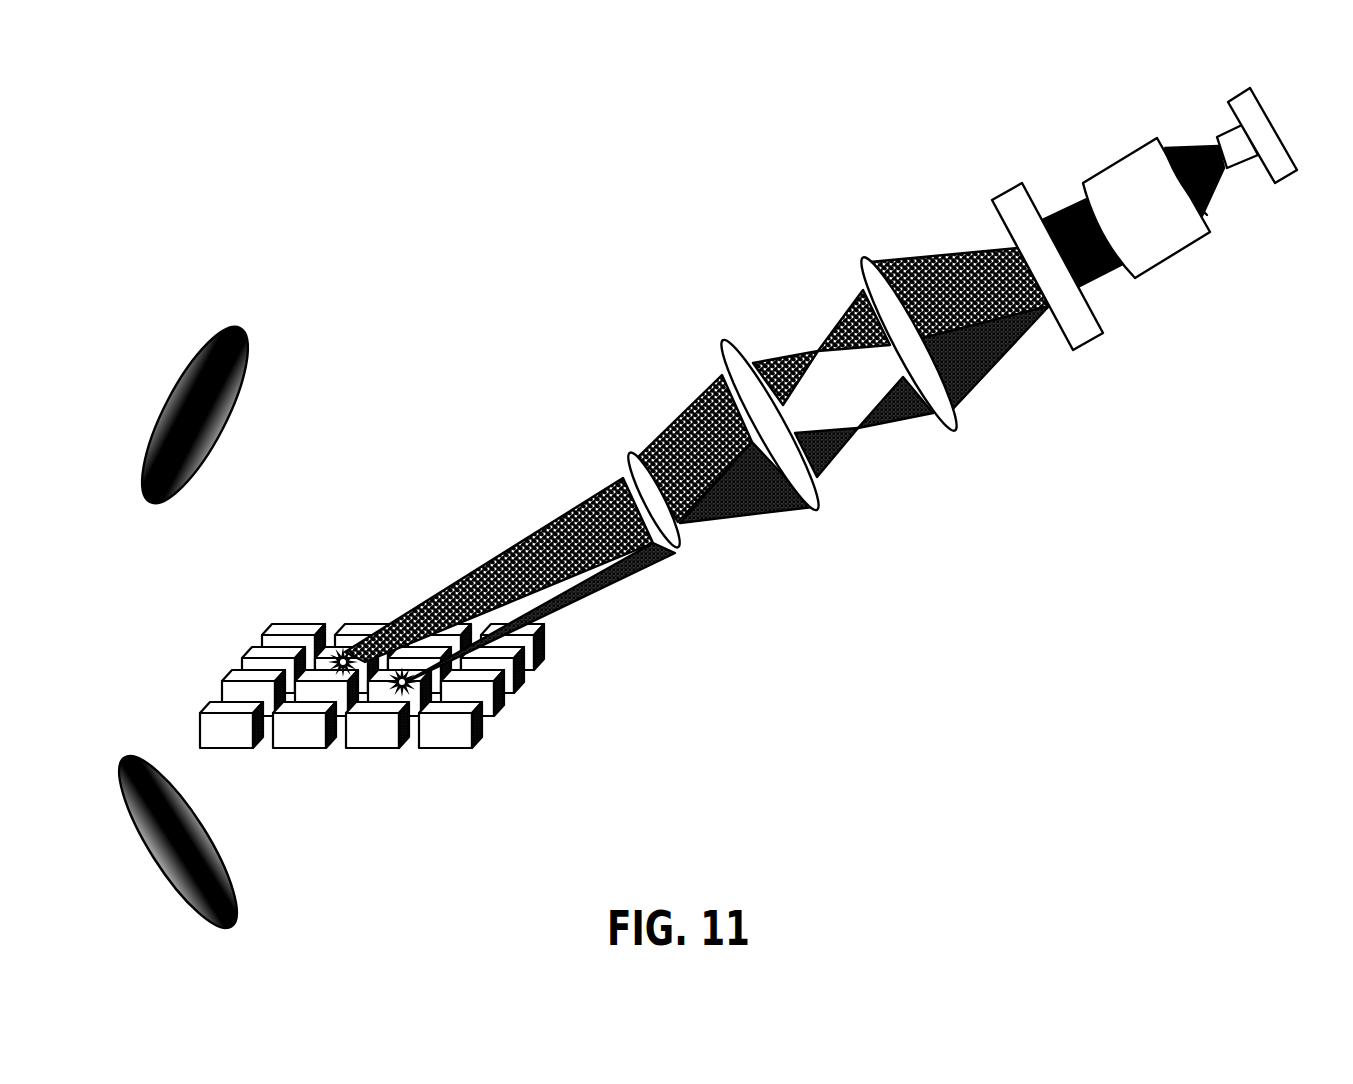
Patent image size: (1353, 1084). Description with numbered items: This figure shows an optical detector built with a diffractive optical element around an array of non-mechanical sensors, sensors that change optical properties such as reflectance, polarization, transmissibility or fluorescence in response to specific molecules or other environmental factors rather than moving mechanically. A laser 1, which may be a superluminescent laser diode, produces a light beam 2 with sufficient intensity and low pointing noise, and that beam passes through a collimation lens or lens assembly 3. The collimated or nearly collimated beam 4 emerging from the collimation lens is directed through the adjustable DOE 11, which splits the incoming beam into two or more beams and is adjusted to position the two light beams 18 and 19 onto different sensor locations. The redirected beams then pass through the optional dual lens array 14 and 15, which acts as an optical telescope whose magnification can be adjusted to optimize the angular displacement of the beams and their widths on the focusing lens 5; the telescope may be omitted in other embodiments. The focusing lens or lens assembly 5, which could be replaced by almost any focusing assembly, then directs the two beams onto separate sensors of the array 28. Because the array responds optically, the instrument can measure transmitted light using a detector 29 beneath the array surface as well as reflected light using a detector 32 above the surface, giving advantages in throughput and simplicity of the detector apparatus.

The laser 1 is at (1288, 190).
The light beam 2 is at (1188, 140).
The collimation lens or lens assembly 3 is at (1123, 152).
The collimated beam 4 is at (1067, 204).
The adjustable DOE 11 is at (1010, 185).
The first light beam 18 is at (947, 250).
The second light beam 19 is at (1004, 365).
The dual lens array 14 is at (860, 254).
The dual lens array 15 is at (720, 334).
The focusing lens or lens assembly 5 is at (627, 444).
The sample array 28 is at (534, 696).
The detector 32 is at (251, 324).
The detector 29 is at (216, 870).